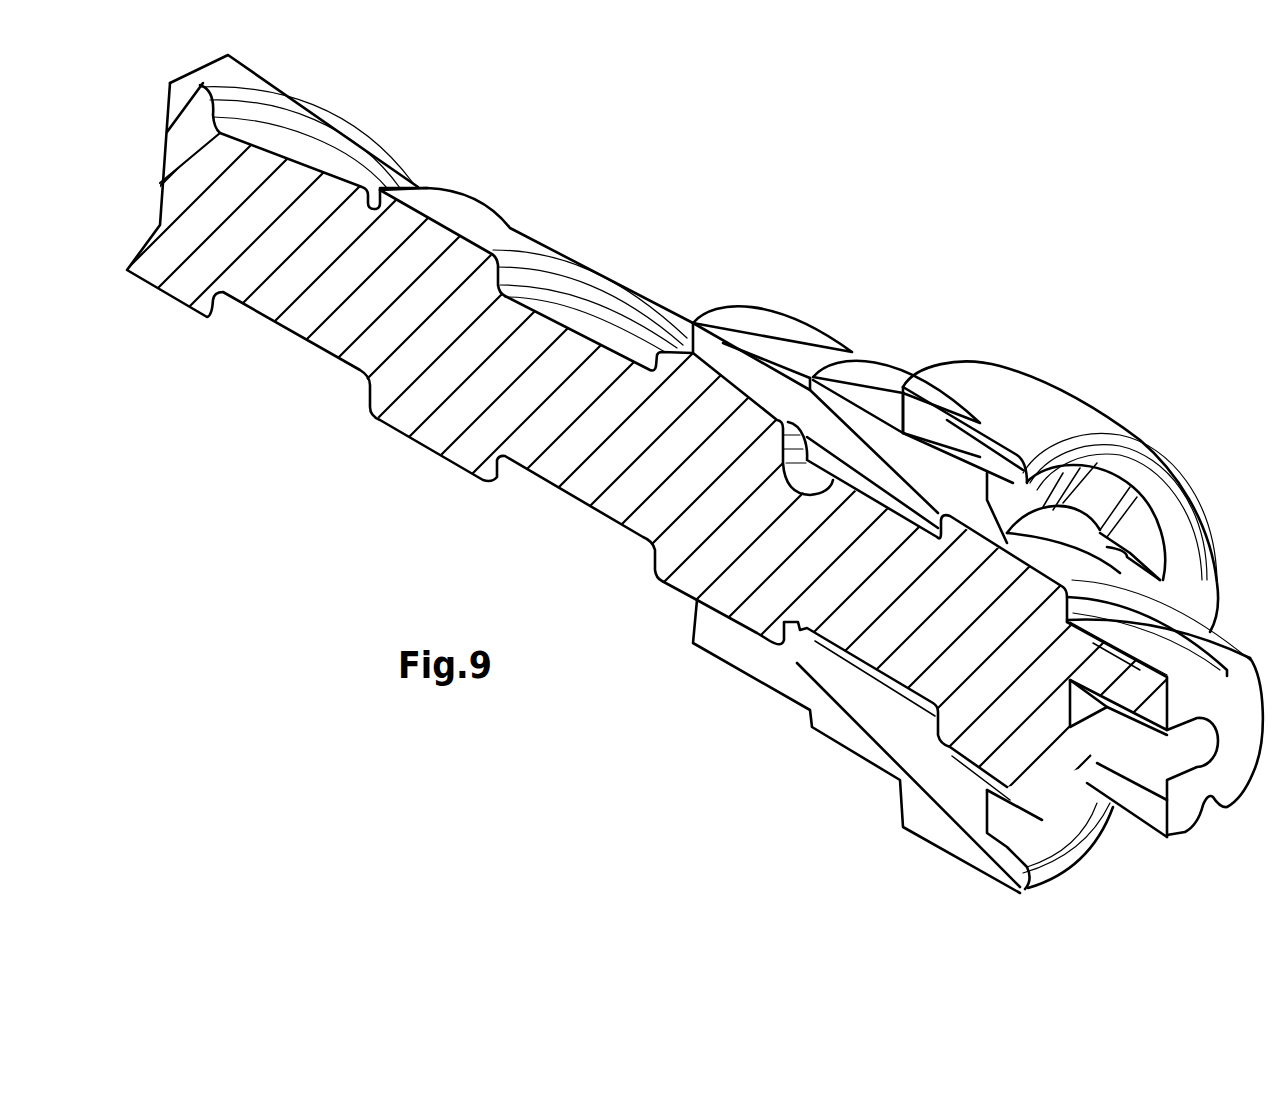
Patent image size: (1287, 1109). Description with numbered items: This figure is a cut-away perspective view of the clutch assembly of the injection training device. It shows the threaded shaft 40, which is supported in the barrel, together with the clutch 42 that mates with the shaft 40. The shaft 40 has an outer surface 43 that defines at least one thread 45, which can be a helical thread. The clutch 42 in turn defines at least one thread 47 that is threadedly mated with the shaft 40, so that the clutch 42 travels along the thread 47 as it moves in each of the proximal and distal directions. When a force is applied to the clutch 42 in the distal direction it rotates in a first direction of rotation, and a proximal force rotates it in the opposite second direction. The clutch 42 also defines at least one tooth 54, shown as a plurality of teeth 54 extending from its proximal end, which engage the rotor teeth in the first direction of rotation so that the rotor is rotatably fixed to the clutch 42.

The shaft 40 is at (326, 293).
The clutch 42 is at (1052, 364).
The outer surface 43 is at (600, 337).
The thread 45 is at (497, 233).
The thread 47 is at (807, 430).
The tooth 54 is at (1120, 508).